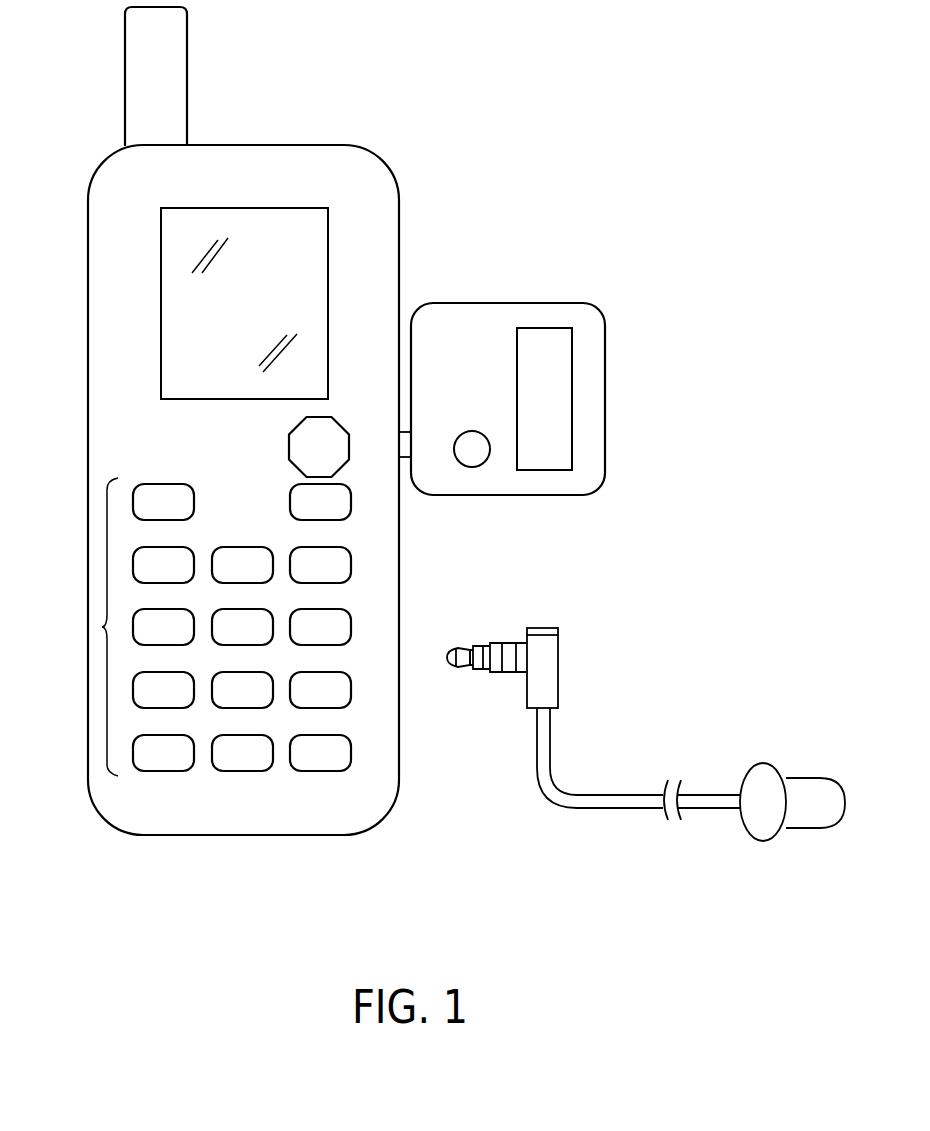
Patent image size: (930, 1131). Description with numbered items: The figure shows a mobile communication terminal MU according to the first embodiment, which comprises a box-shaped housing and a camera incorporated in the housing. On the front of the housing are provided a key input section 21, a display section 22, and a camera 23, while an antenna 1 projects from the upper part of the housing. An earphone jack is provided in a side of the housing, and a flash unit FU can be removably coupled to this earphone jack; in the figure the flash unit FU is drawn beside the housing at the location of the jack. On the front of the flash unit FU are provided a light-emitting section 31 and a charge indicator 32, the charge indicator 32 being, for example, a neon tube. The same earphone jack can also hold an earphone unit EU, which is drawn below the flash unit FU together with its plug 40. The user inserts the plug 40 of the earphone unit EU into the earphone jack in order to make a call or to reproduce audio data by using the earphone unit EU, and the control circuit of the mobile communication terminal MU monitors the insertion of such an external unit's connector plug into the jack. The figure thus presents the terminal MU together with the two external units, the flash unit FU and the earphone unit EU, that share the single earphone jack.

The antenna 1 is at (126, 60).
The mobile communication terminal MU is at (90, 382).
The display section 22 is at (162, 258).
The camera 23 is at (300, 447).
The key input section 21 is at (102, 627).
The flash unit FU is at (598, 384).
The light-emitting section 31 is at (550, 462).
The charge indicator 32 is at (472, 463).
The plug 40 is at (478, 680).
The earphone unit EU is at (766, 830).